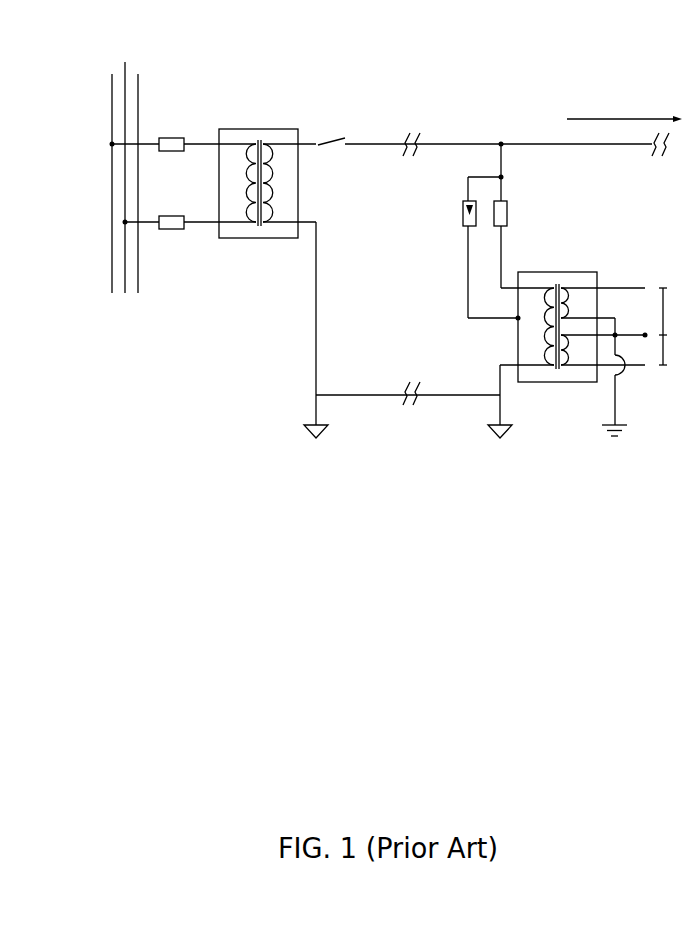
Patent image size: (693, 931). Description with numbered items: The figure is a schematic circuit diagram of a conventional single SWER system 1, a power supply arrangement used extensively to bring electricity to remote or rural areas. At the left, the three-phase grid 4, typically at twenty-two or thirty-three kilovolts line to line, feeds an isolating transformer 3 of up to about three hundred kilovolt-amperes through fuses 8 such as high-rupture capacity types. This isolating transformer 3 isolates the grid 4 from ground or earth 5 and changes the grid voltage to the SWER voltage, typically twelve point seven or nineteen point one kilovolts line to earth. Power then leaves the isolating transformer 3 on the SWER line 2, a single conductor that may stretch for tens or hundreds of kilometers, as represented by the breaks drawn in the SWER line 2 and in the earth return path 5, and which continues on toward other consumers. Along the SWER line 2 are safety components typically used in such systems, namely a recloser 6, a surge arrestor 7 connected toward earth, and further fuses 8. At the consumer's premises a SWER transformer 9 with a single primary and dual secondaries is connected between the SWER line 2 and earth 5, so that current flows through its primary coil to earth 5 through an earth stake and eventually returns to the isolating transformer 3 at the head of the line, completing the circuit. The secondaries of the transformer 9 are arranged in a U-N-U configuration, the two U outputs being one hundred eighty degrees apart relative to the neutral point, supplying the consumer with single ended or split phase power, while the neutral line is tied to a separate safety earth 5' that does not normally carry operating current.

The single SWER system 1 is at (405, 70).
The SWER line 2 is at (535, 142).
The isolating transformer 3 is at (259, 129).
The grid 4 is at (138, 107).
The earth 5 is at (472, 348).
The safety earth 5' is at (627, 377).
The recloser 6 is at (330, 139).
The surge arrestor 7 is at (463, 212).
The fuses 8 is at (172, 138).
The SWER transformer 9 is at (556, 272).